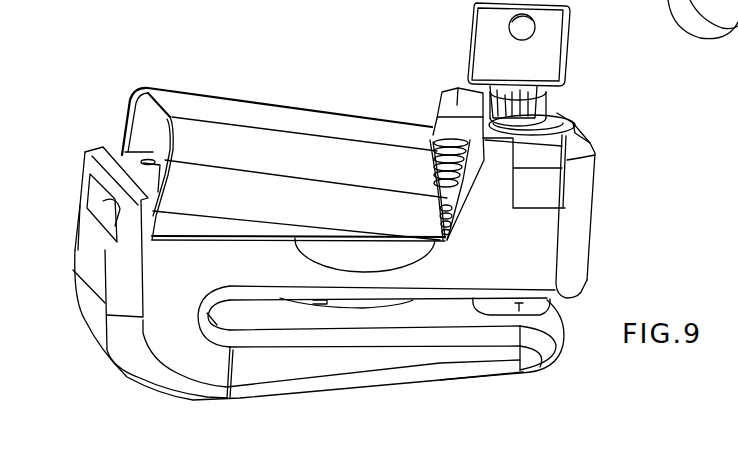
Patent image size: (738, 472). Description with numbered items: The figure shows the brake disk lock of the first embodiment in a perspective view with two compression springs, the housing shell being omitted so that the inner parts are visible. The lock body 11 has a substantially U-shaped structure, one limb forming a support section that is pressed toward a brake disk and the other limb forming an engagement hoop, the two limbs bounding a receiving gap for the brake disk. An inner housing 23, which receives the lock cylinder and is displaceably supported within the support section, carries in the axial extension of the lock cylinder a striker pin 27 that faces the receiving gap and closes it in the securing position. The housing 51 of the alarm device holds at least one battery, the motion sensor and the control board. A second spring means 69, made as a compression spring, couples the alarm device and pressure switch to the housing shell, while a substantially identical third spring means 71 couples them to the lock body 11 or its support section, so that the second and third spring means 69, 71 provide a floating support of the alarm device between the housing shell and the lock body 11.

The lock body 11 is at (92, 373).
The inner housing 23 is at (566, 124).
The striker pin 27 is at (550, 302).
The housing 51 is at (229, 107).
The second spring means 69 is at (430, 133).
The third spring means 71 is at (443, 240).